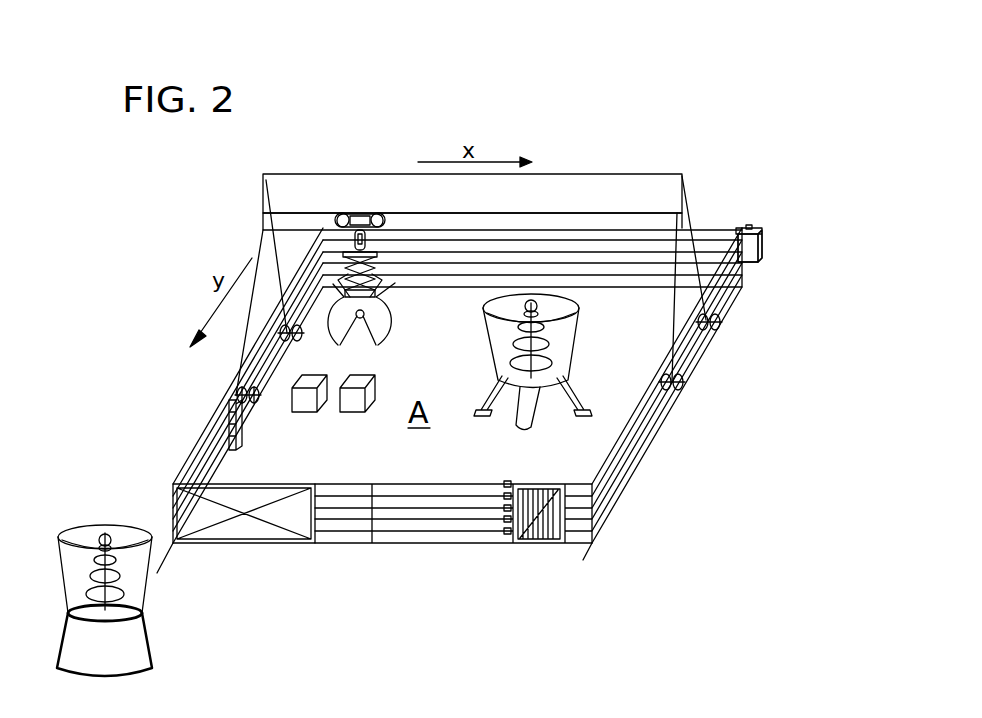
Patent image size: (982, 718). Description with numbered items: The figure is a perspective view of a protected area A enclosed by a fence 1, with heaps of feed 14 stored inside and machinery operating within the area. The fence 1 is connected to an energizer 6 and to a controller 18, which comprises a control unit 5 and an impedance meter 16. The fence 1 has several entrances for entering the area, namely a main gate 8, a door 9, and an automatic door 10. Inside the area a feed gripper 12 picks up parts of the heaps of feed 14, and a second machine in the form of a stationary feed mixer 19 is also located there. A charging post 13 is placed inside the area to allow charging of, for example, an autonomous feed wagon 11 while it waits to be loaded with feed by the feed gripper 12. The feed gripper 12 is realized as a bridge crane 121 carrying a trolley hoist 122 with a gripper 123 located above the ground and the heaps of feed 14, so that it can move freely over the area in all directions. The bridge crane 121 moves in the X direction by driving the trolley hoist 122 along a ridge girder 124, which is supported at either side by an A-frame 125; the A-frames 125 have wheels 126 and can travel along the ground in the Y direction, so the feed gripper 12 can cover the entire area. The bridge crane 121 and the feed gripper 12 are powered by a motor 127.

The fence 1 is at (172, 441).
The control unit 5 is at (763, 233).
The energizer 6 is at (753, 231).
The main gate 8 is at (513, 549).
The door 9 is at (565, 549).
The automatic door 10 is at (315, 549).
The autonomous feed wagon 11 is at (82, 527).
The feed gripper 12 is at (380, 195).
The charging post 13 is at (230, 415).
The heaps of feed 14 is at (313, 380).
The impedance meter 16 is at (744, 228).
The controller 18 is at (770, 266).
The stationary feed mixer 19 is at (561, 348).
The bridge crane 121 is at (258, 204).
The trolley hoist 122 is at (357, 213).
The gripper 123 is at (384, 316).
The ridge girder 124 is at (594, 223).
The A-frame 125 is at (696, 230).
The wheels 126 is at (718, 328).
The motor 127 is at (242, 393).